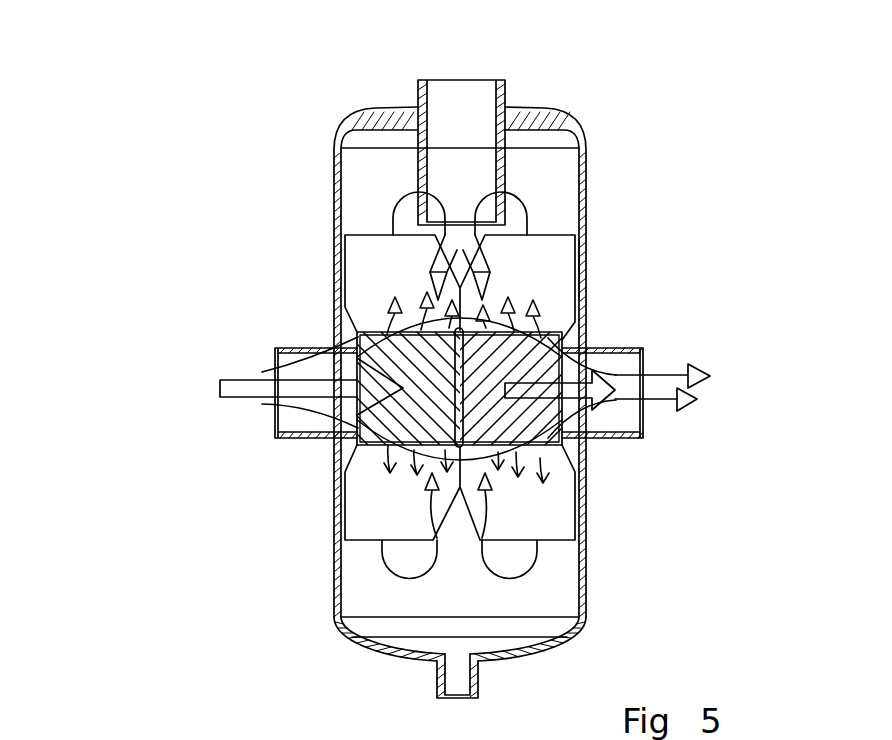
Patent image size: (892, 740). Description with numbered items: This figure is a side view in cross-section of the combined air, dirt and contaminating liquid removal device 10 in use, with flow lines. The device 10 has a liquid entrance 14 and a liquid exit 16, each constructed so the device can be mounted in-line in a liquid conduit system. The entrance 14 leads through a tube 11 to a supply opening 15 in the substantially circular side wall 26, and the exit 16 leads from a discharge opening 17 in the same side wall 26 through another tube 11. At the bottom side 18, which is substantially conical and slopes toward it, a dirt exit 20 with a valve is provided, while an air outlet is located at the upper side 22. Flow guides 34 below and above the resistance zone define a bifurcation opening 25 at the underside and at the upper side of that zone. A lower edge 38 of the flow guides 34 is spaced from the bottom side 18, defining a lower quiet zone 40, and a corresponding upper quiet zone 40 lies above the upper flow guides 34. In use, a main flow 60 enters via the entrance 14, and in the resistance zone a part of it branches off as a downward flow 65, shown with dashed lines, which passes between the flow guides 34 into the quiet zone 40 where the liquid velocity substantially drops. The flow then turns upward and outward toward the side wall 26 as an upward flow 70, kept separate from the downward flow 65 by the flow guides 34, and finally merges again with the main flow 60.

The combined air and dirt and contaminating liquid removal device 10 is at (713, 152).
The tube 11 is at (300, 440).
The liquid entrance 14 is at (272, 350).
The supply opening 15 is at (358, 413).
The liquid exit 16 is at (643, 347).
The discharge opening 17 is at (587, 347).
The bottom side 18 is at (385, 655).
The dirt exit 20 is at (478, 692).
The upper side 22 is at (377, 113).
The bifurcation opening 25 is at (455, 330).
The side wall 26 is at (585, 253).
The flow guides 34 is at (367, 275).
The lower edge 38 is at (370, 230).
The quiet zone 40 is at (512, 177).
The main flow 60 is at (222, 388).
The downward flow 65 is at (540, 317).
The upward flow 70 is at (433, 193).